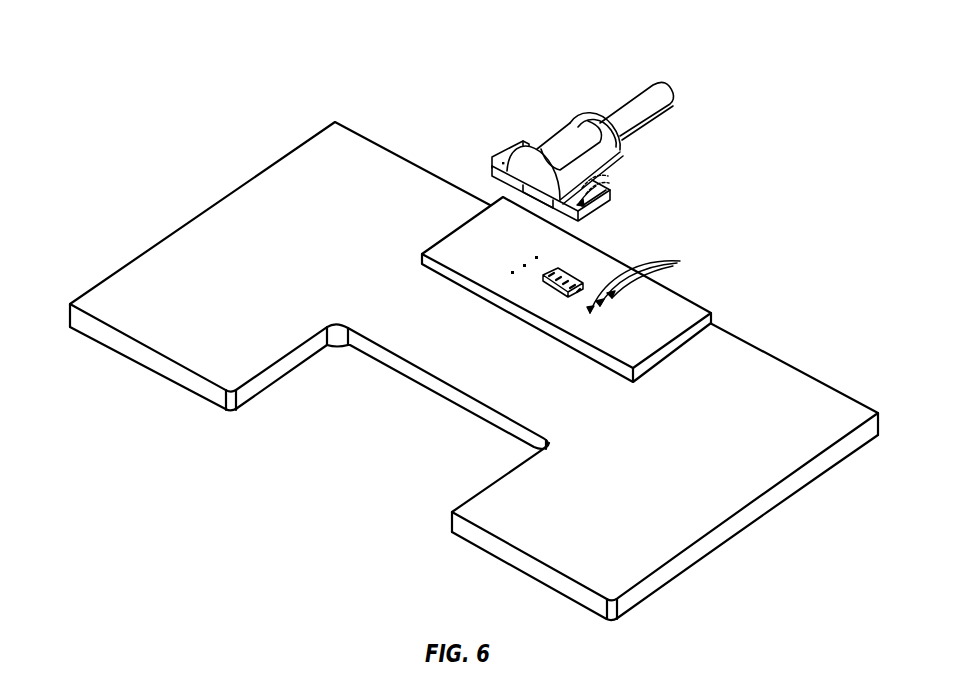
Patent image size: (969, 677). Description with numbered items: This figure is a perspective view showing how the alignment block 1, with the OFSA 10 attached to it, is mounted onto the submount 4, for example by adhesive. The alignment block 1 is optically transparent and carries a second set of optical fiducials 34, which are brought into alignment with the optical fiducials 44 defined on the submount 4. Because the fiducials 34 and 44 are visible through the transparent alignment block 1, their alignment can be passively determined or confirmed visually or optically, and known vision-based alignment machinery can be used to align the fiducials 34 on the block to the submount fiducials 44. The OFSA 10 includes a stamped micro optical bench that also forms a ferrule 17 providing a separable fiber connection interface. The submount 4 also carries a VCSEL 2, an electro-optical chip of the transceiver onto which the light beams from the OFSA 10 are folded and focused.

The alignment block 1 is at (604, 204).
The VCSEL 2 is at (570, 275).
The submount 4 is at (690, 308).
The OFSA 10 is at (605, 98).
The ferrule 17 is at (672, 112).
The second set of optical fiducials 34 is at (606, 181).
The optical fiducials 44 is at (647, 283).